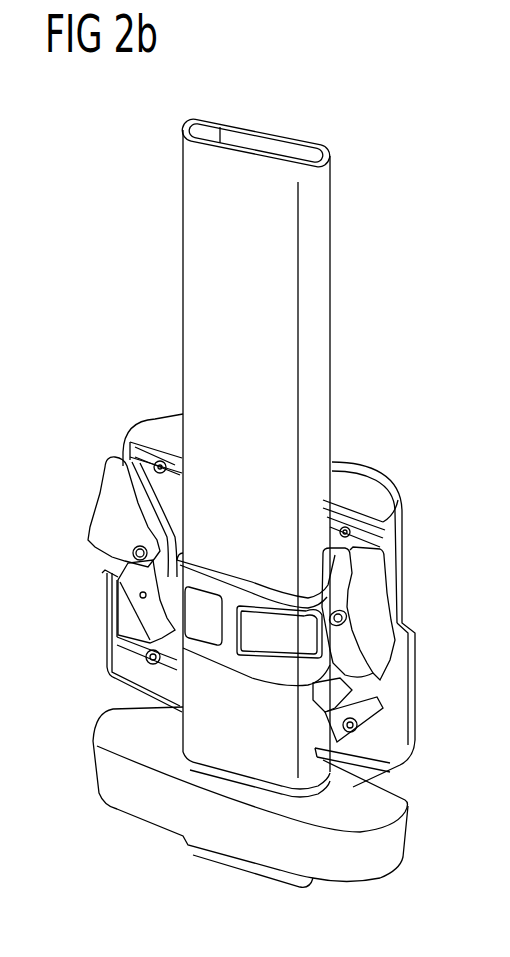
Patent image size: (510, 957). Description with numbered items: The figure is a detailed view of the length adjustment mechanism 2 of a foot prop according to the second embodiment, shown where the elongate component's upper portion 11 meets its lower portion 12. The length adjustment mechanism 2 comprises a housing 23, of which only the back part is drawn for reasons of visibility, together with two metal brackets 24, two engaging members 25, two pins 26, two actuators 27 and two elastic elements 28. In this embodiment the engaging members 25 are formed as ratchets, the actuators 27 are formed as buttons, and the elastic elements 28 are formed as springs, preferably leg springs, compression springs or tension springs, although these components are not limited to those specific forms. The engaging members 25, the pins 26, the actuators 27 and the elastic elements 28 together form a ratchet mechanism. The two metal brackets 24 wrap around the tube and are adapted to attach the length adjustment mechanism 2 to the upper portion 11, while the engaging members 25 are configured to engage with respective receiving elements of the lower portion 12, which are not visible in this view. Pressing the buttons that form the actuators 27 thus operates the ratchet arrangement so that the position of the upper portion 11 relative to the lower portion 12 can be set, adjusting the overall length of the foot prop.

The length adjustment mechanism 2 is at (122, 410).
The upper portion 11 is at (316, 307).
The lower portion 12 is at (190, 723).
The housing 23 is at (387, 537).
The metal brackets 24 is at (215, 570).
The engaging members 25 is at (150, 610).
The pins 26 is at (130, 550).
The actuators 27 is at (112, 498).
The elastic elements 28 is at (273, 635).